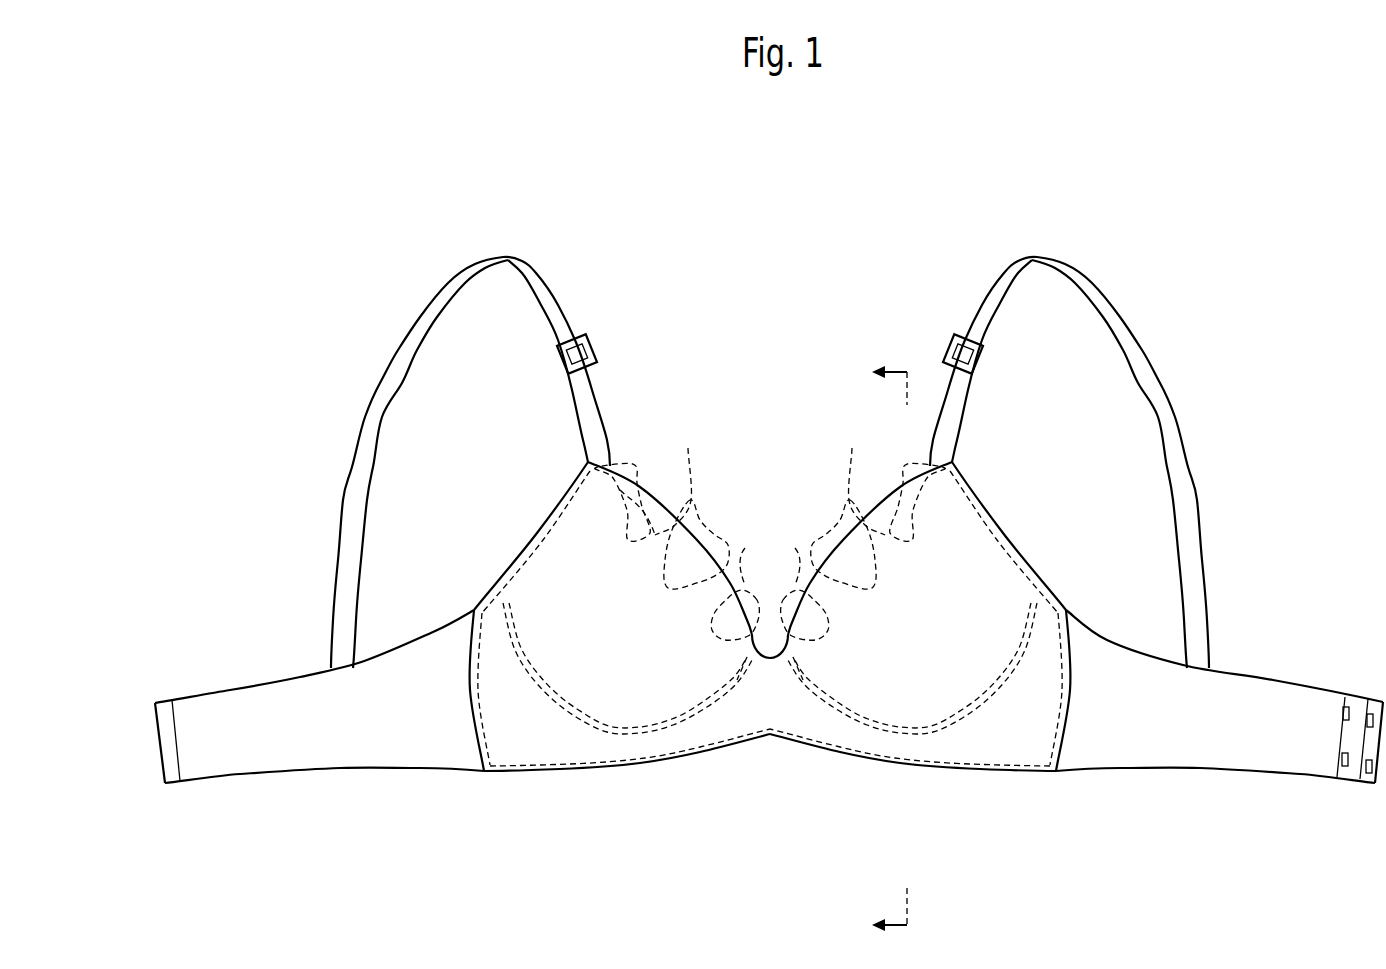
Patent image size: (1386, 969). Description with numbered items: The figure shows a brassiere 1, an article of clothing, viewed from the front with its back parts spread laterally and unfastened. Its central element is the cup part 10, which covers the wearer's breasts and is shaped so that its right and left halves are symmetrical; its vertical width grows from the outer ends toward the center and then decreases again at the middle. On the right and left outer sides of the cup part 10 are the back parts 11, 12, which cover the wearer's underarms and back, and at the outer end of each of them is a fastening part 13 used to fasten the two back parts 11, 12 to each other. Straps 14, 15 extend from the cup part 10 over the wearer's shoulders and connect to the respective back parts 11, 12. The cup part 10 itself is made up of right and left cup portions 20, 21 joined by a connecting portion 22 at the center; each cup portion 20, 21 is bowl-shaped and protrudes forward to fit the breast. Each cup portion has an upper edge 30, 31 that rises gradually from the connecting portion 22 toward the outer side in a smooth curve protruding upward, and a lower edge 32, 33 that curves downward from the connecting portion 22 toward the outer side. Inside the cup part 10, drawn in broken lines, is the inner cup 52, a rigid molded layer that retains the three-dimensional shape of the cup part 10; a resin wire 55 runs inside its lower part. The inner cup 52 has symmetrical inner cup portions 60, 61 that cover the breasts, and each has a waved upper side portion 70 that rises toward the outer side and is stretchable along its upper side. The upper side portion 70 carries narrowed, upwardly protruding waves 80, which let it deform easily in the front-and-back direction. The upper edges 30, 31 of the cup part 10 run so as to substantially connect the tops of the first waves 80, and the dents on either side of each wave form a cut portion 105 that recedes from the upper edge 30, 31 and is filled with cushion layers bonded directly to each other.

The brassiere 1 is at (745, 225).
The cup part 10 is at (654, 775).
The back part 11 is at (355, 723).
The back part 12 is at (1168, 734).
The fastening part 13 is at (172, 782).
The strap 14 is at (460, 258).
The strap 15 is at (1090, 272).
The cup portion 20 is at (667, 694).
The cup portion 21 is at (903, 694).
The connecting portion 22 is at (773, 704).
The upper edge 30 is at (690, 530).
The upper edge 31 is at (853, 528).
The lower edge 32 is at (550, 773).
The lower edge 33 is at (947, 768).
The inner cup 52 is at (1030, 548).
The resin wire 55 is at (607, 733).
The inner cup portion 60 is at (533, 533).
The inner cup portion 61 is at (990, 505).
The upper side portion 70 is at (655, 522).
The wave 80 is at (757, 598).
The cut portion 105 is at (622, 490).